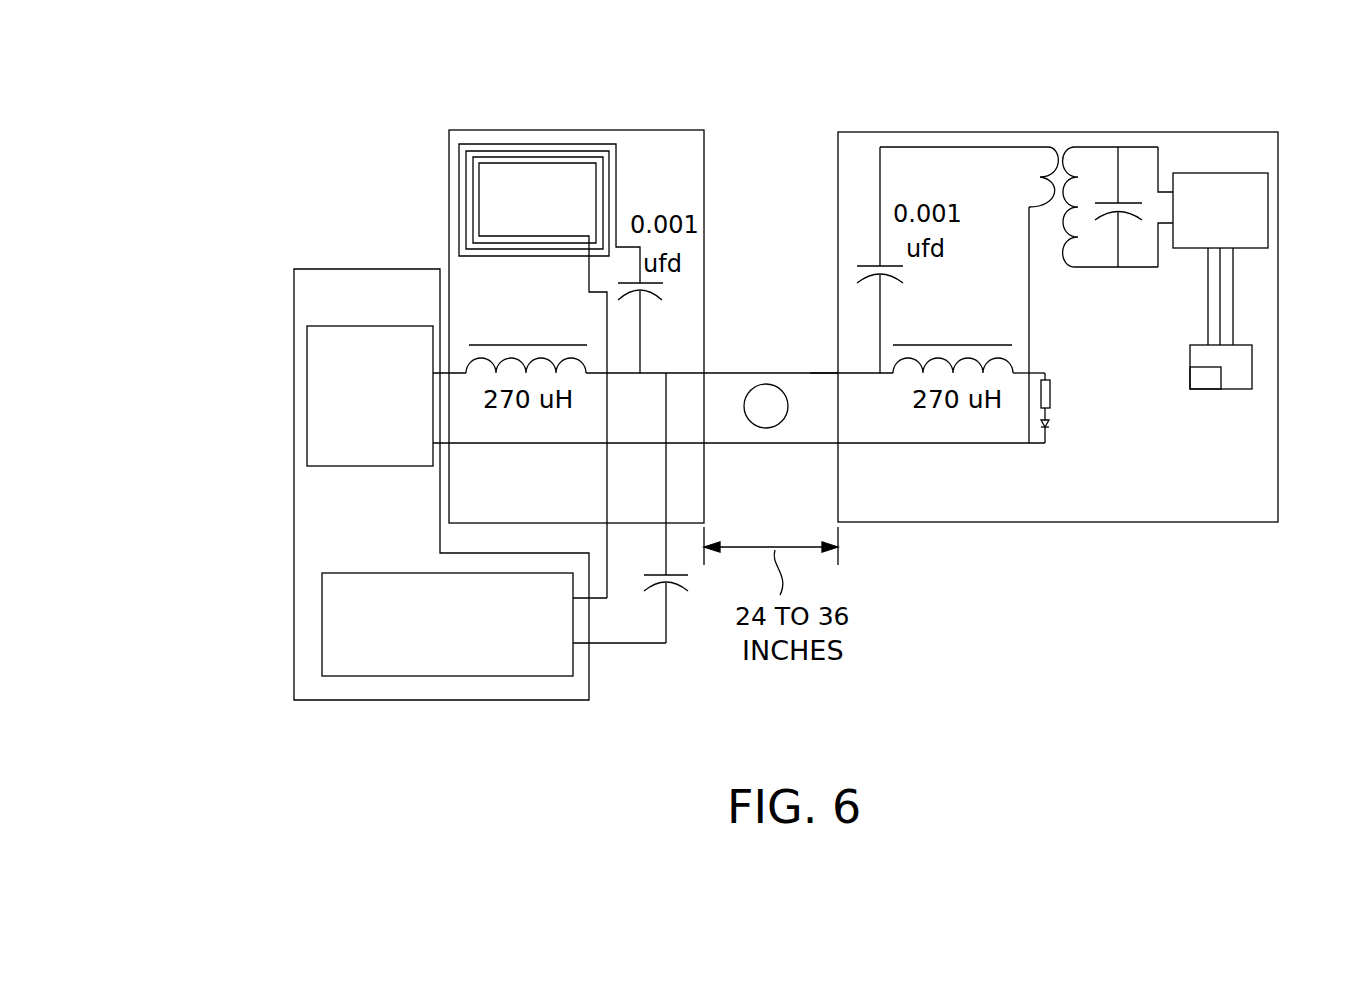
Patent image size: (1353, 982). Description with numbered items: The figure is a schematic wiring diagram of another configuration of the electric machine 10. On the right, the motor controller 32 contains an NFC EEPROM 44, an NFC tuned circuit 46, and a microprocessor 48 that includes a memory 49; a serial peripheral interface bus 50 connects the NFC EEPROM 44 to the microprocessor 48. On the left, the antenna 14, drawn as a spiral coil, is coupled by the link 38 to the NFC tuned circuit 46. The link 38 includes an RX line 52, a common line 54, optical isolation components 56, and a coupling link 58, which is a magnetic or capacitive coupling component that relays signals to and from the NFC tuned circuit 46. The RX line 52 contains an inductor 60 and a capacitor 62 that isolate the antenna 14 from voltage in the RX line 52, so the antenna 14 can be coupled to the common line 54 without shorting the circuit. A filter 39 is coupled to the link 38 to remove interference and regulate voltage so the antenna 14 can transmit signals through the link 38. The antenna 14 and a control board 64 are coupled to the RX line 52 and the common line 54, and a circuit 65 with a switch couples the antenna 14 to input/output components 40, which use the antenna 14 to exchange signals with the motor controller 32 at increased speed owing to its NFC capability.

The electric machine 10 is at (282, 105).
The antenna 14 is at (540, 144).
The motor controller 32 is at (1028, 560).
The link 38 is at (717, 373).
The filter 39 is at (768, 395).
The input/output components 40 is at (294, 556).
The NFC EEPROM 44 is at (1268, 199).
The NFC tuned circuit 46 is at (1145, 147).
The microprocessor 48 is at (1252, 365).
The memory 49 is at (1207, 389).
The serial peripheral interface bus 50 is at (1235, 275).
The RX line 52 is at (823, 373).
The common line 54 is at (800, 443).
The optical isolation components 56 is at (1050, 422).
The coupling link 58 is at (1055, 128).
The inductor 60 is at (508, 332).
The capacitor 62 is at (665, 292).
The control board 64 is at (294, 397).
The circuit 65 is at (428, 676).